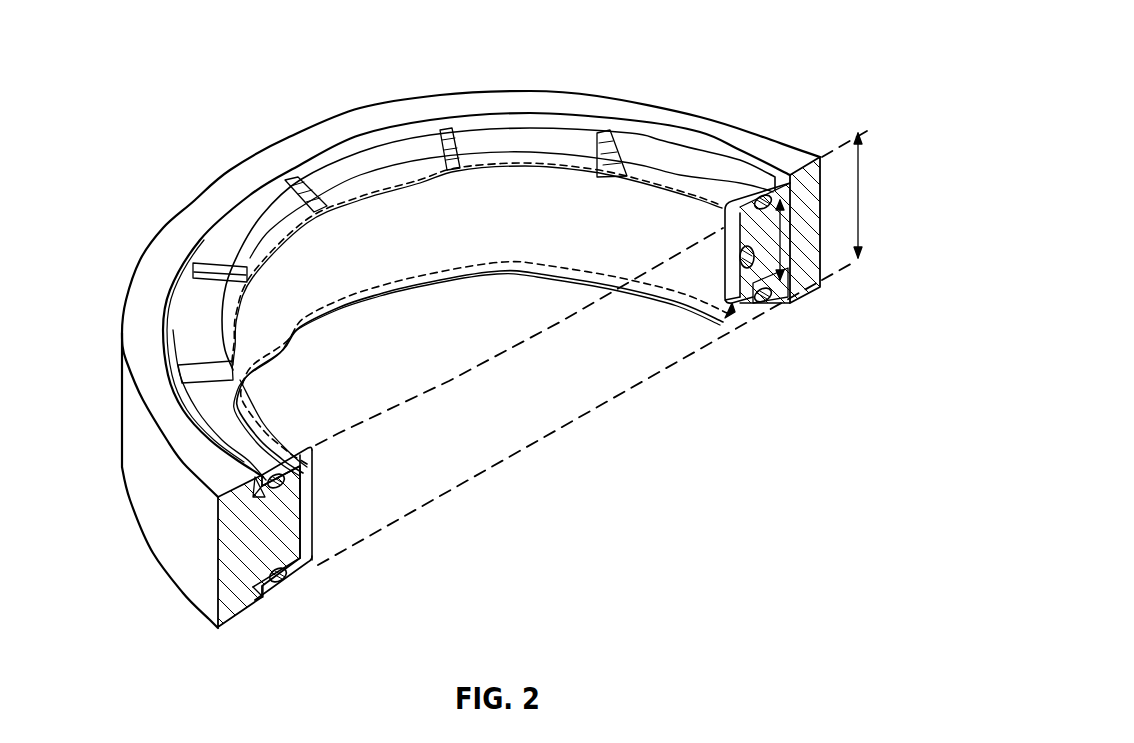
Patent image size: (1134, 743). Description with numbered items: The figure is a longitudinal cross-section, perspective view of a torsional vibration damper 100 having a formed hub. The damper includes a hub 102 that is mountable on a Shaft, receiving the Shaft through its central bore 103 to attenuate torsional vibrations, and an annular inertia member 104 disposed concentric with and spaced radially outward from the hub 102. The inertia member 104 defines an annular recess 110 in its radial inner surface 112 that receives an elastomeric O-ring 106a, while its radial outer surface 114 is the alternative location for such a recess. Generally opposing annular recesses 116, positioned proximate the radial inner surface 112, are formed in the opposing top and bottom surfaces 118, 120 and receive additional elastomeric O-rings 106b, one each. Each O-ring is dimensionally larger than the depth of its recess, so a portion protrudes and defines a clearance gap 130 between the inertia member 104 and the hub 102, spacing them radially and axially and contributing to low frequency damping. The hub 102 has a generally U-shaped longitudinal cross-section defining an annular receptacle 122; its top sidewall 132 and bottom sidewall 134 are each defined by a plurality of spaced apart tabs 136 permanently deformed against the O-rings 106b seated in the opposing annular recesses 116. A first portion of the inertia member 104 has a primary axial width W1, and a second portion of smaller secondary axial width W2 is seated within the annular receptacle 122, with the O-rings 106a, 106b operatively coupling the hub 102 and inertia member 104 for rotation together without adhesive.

The torsional vibration damper 100 is at (795, 62).
The hub 102 is at (330, 172).
The central bore 103 is at (618, 252).
The inertia member 104 is at (688, 123).
The elastomeric O-ring 106a is at (737, 260).
The elastomeric O-rings 106b is at (440, 130).
The annular recess 110 is at (322, 533).
The radial inner surface 112 is at (317, 560).
The radial outer surface 114 is at (183, 548).
The opposing annular recesses 116 is at (275, 468).
The top surface 118 is at (218, 463).
The bottom surface 120 is at (217, 626).
The annular receptacle 122 is at (318, 468).
The clearance gap 130 is at (727, 322).
The top sidewall 132 is at (232, 252).
The bottom sidewall 134 is at (437, 290).
The spaced apart tabs 136 is at (500, 273).
The primary axial width W1 is at (860, 197).
The secondary axial width W2 is at (783, 238).
The shaft Shaft is at (567, 430).